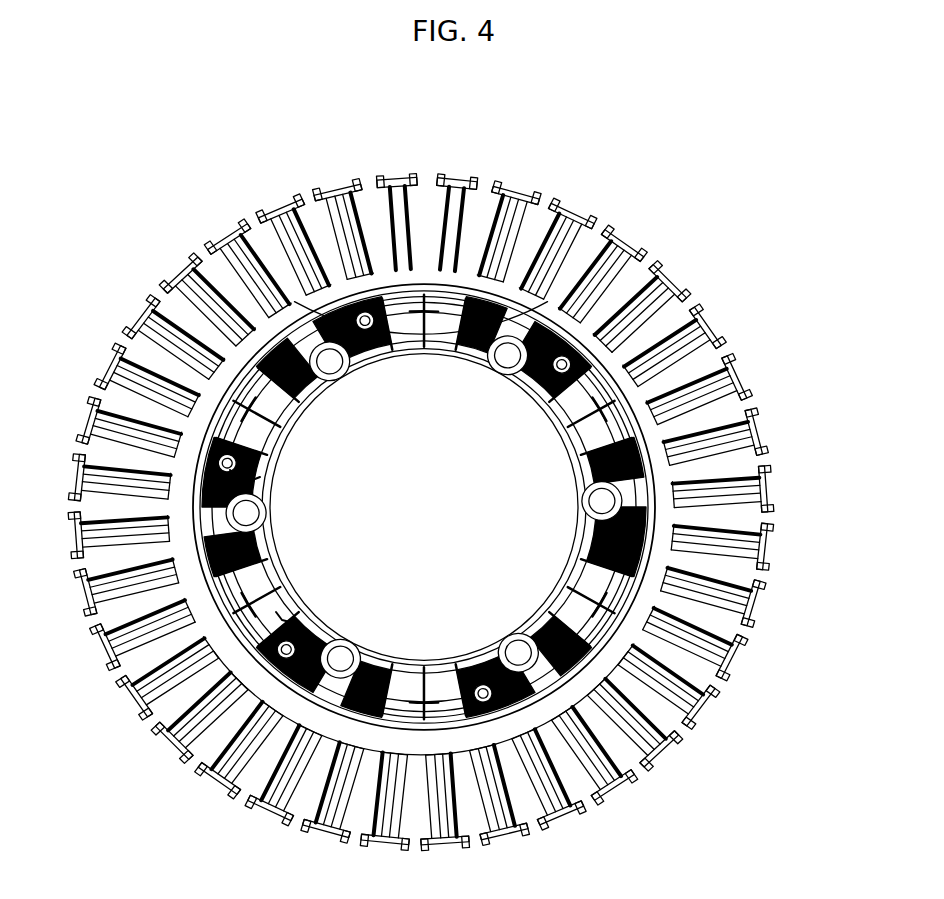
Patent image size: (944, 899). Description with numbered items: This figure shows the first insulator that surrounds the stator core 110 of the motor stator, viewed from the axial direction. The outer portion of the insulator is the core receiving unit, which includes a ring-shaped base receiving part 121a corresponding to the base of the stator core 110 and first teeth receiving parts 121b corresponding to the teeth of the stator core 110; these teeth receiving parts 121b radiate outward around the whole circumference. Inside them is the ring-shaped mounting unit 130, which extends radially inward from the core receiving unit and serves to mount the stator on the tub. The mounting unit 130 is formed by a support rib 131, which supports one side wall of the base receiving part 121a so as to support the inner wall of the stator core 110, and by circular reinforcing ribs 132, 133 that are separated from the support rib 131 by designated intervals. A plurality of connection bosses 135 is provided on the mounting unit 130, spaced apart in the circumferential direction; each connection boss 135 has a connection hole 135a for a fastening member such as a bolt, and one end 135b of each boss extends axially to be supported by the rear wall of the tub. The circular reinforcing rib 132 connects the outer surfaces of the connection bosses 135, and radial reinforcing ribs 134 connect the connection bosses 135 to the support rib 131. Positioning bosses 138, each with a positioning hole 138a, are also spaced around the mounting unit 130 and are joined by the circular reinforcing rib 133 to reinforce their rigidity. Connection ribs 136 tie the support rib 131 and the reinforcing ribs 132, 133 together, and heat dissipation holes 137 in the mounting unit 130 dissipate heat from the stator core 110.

The stator core 110 is at (453, 104).
The base receiving part 121a is at (713, 360).
The first teeth receiving parts 121b is at (598, 248).
The mounting unit 130 is at (424, 506).
The support rib 131 is at (510, 507).
The circular reinforcing rib 132 is at (424, 507).
The circular reinforcing rib 133 is at (568, 460).
The radial reinforcing ribs 134 is at (597, 539).
The connection bosses 135 is at (423, 504).
The connection hole 135a is at (504, 632).
The one end 135b is at (360, 641).
The connection ribs 136 is at (422, 355).
The heat dissipation holes 137 is at (316, 601).
The positioning bosses 138 is at (272, 464).
The positioning hole 138a is at (286, 487).